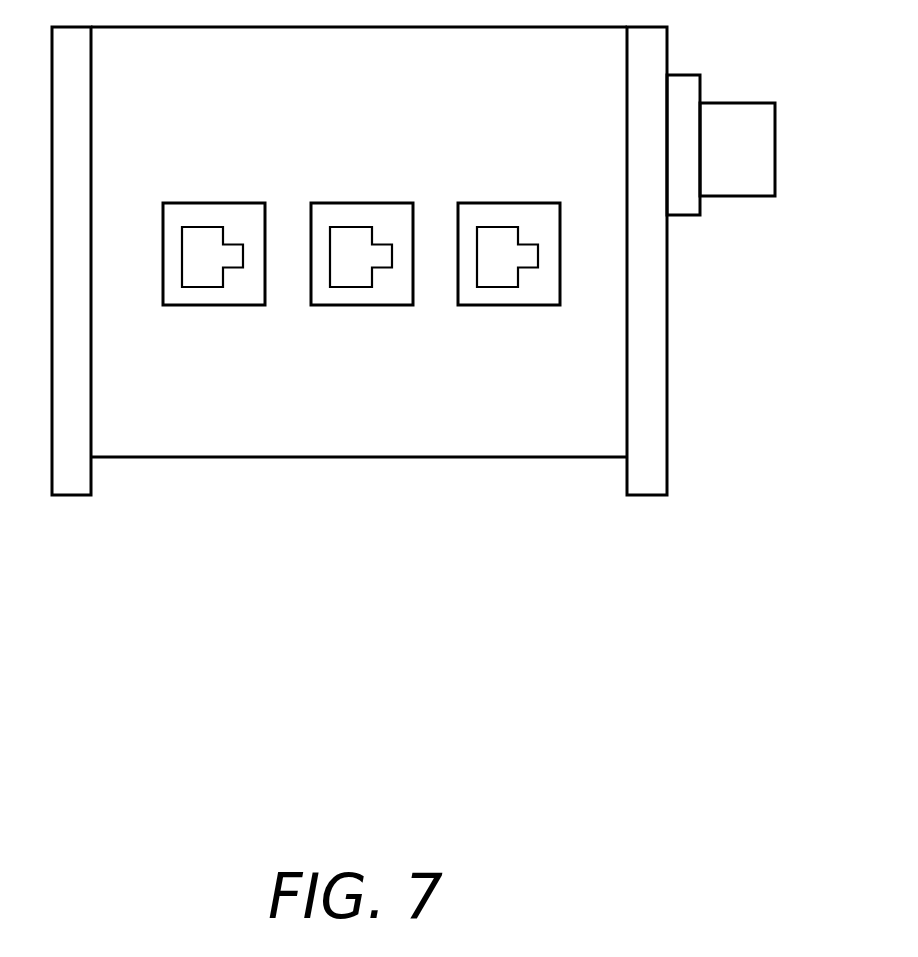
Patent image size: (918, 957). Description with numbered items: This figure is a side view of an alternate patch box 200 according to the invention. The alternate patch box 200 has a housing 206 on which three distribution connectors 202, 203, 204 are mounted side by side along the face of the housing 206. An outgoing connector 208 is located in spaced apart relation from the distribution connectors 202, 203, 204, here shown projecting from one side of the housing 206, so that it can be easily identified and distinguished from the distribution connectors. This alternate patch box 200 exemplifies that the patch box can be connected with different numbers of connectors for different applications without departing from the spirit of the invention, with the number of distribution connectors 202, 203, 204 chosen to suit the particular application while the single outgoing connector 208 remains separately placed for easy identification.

The alternate patch box 200 is at (474, 470).
The distribution connector 202 is at (228, 203).
The distribution connector 203 is at (350, 202).
The distribution connector 204 is at (518, 202).
The housing 206 is at (667, 423).
The outgoing connector 208 is at (735, 197).